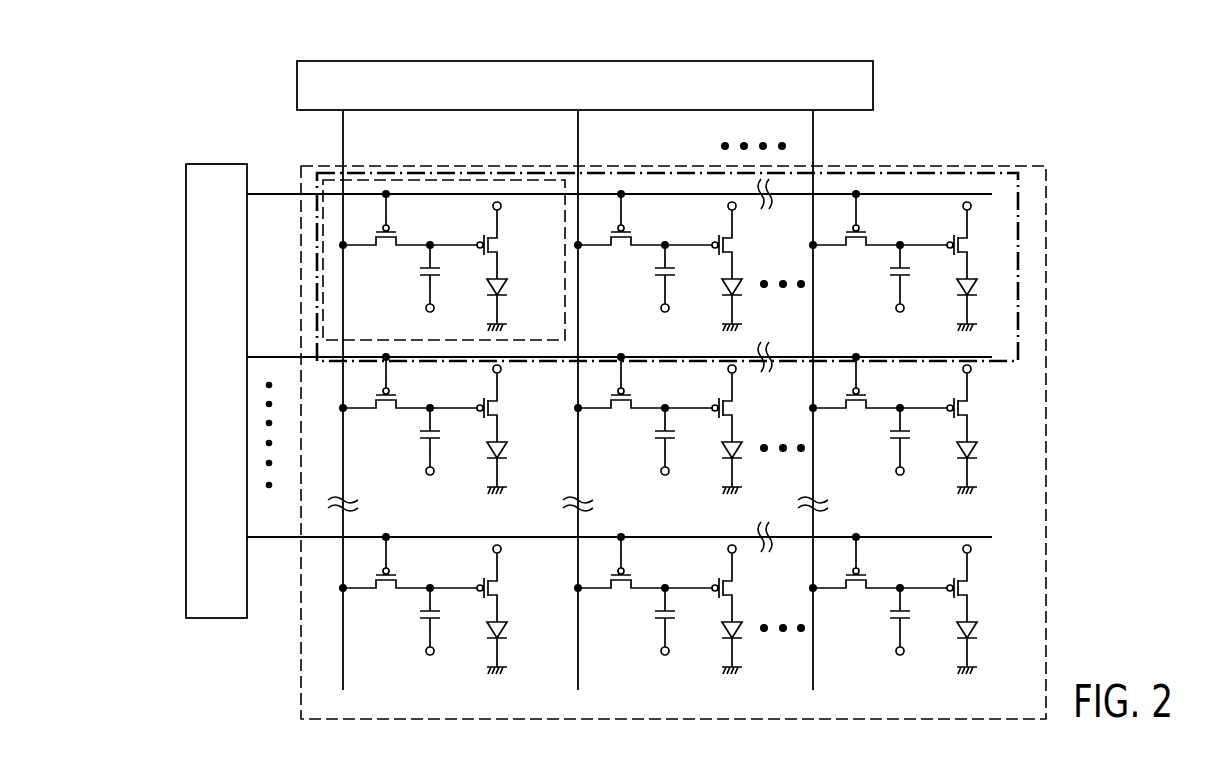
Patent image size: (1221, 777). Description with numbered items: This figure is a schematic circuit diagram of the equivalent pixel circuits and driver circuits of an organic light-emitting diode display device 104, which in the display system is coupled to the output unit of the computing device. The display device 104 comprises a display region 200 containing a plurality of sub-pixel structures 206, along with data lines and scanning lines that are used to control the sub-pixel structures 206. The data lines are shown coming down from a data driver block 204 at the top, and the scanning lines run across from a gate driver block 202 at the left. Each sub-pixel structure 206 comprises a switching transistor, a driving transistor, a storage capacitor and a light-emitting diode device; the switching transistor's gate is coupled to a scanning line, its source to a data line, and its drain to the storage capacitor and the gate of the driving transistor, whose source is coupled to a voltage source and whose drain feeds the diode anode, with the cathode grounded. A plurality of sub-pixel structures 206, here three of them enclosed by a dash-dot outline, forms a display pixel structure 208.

The display device 104 is at (623, 46).
The display region 200 is at (1046, 338).
The gate drivers 202 is at (221, 618).
The data drivers 204 is at (873, 90).
The sub-pixel structure 206 is at (318, 168).
The display pixel structure 208 is at (1018, 195).